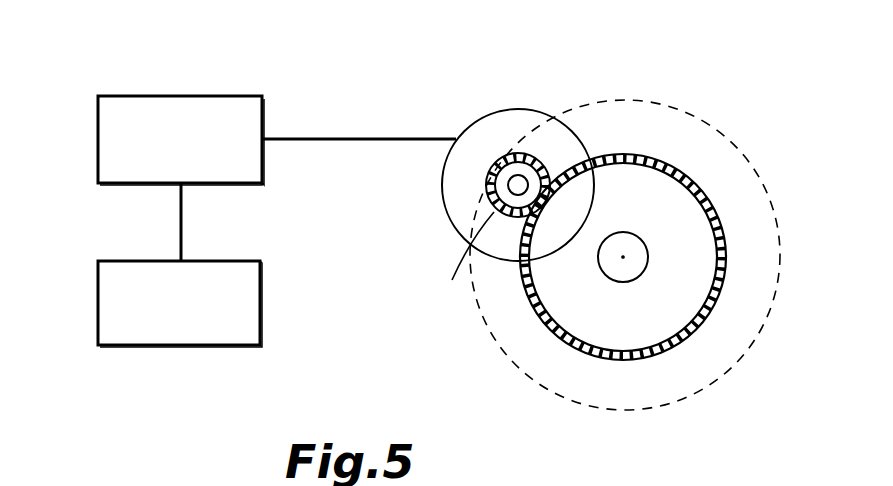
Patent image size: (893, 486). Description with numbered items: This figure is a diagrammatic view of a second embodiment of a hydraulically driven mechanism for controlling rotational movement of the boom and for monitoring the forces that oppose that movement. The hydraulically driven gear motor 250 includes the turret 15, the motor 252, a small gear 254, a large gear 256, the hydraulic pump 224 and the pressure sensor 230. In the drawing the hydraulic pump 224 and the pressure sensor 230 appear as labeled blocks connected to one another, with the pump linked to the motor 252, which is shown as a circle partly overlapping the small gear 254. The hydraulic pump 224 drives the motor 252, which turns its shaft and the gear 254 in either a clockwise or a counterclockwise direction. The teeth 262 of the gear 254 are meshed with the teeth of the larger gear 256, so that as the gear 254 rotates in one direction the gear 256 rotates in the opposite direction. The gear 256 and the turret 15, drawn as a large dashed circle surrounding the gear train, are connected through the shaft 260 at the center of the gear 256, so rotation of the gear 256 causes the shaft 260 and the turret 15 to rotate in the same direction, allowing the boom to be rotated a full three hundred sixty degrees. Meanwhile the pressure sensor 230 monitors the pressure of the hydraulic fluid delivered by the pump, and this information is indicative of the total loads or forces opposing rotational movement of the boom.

The hydraulically driven gear motor 250 is at (84, 76).
The hydraulic pump 224 is at (126, 96).
The pressure sensor 230 is at (200, 261).
The turret 15 is at (606, 96).
The motor 252 is at (485, 113).
The gear 254 is at (525, 153).
The gear 256 is at (667, 193).
The shaft 260 is at (648, 252).
The teeth 262 is at (447, 263).